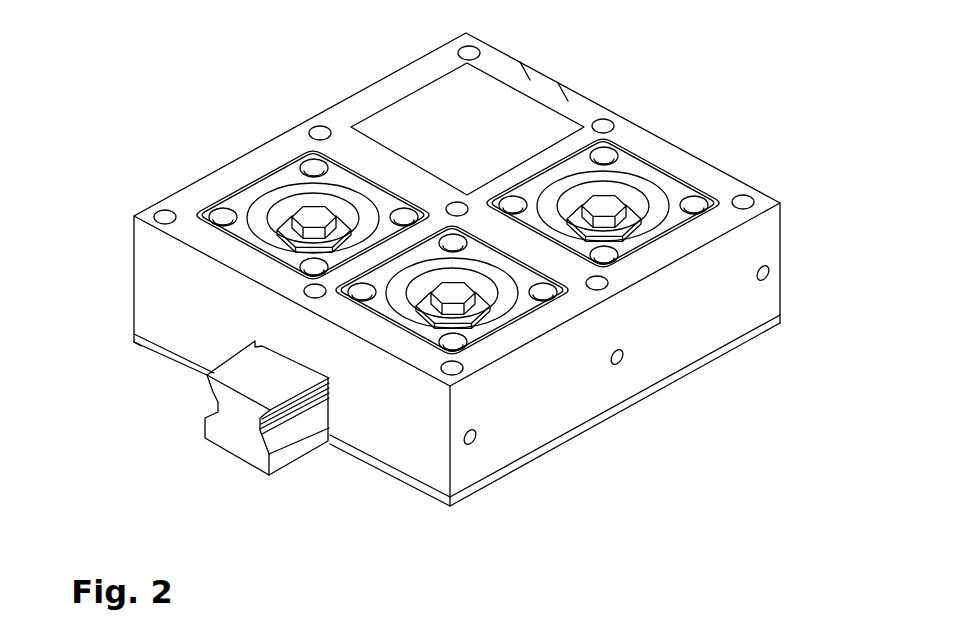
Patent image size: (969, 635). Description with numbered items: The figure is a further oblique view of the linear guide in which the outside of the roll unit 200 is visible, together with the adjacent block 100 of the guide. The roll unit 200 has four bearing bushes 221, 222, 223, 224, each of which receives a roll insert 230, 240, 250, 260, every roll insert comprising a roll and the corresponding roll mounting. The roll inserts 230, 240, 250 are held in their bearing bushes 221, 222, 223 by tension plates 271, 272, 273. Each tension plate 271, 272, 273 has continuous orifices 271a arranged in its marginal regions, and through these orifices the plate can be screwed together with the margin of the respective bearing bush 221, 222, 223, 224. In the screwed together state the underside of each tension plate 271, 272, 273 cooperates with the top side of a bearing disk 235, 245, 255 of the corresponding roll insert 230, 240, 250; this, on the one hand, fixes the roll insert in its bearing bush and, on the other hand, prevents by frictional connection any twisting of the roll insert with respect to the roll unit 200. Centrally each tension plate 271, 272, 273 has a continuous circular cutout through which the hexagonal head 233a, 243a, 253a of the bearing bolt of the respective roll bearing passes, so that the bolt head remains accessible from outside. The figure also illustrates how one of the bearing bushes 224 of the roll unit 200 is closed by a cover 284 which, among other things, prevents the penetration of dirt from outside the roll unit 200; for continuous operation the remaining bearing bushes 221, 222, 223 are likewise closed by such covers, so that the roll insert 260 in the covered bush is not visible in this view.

The tool block 100 is at (238, 452).
The roll unit 200 is at (710, 390).
The bearing bush 221 is at (301, 157).
The bearing bush 222 is at (447, 305).
The bearing bush 223 is at (690, 183).
The bearing bush 224 is at (565, 110).
The roll insert 230 is at (306, 191).
The hexagonal head 233a is at (140, 345).
The bearing disk 235 is at (343, 210).
The roll insert 240 is at (487, 333).
The hexagonal head 243a is at (492, 312).
The bearing disk 245 is at (505, 328).
The roll insert 250 is at (650, 200).
The hexagonal head 253a is at (647, 212).
The bearing disk 255 is at (666, 205).
The roll insert 260 is at (527, 90).
The tension plate 271 is at (238, 203).
The continuous orifice 271a is at (195, 217).
The tension plate 272 is at (430, 335).
The tension plate 273 is at (624, 160).
The cover 284 is at (458, 128).